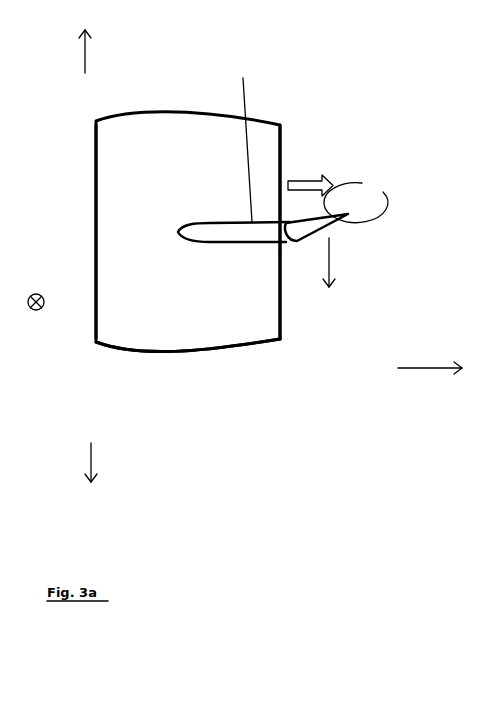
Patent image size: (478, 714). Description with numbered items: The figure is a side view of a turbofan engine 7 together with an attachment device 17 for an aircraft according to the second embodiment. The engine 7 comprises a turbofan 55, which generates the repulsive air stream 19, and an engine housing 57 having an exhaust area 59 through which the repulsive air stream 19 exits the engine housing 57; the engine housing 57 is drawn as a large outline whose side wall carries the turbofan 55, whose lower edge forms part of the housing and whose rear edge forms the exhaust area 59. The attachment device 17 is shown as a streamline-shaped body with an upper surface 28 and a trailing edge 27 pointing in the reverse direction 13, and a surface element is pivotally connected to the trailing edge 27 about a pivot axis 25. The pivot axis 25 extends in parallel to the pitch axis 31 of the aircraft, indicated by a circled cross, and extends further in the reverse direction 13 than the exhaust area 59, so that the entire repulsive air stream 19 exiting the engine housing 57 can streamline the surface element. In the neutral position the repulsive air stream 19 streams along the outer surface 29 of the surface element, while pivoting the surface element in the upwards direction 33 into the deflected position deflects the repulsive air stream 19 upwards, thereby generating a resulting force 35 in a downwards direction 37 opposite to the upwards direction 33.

The engine 7 is at (156, 277).
The reverse direction 13 is at (420, 369).
The attachment device 17 is at (240, 235).
The repulsive air stream 19 is at (303, 185).
The pivot axis 25 is at (295, 238).
The trailing edge 27 is at (272, 240).
The upper surface 28 is at (242, 141).
The outer surface 29 is at (362, 183).
The pitch axis 31 is at (38, 294).
The upwards direction 33 is at (86, 53).
The resulting force 35 is at (330, 258).
The downwards direction 37 is at (96, 462).
The turbofan 55 is at (95, 193).
The engine housing 57 is at (155, 356).
The exhaust area 59 is at (280, 300).